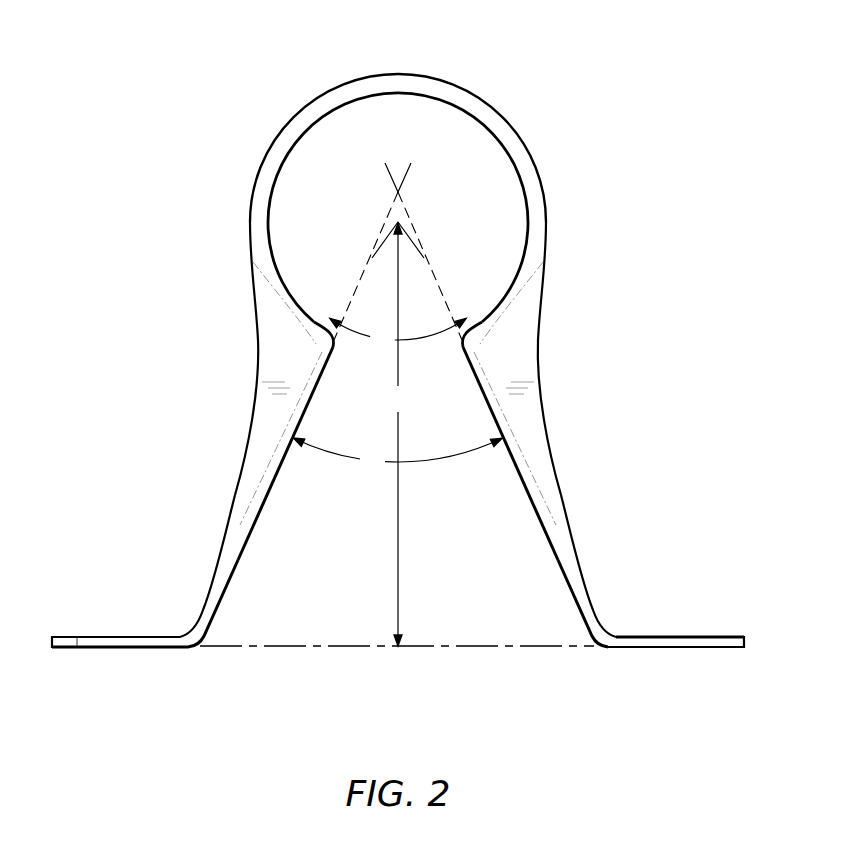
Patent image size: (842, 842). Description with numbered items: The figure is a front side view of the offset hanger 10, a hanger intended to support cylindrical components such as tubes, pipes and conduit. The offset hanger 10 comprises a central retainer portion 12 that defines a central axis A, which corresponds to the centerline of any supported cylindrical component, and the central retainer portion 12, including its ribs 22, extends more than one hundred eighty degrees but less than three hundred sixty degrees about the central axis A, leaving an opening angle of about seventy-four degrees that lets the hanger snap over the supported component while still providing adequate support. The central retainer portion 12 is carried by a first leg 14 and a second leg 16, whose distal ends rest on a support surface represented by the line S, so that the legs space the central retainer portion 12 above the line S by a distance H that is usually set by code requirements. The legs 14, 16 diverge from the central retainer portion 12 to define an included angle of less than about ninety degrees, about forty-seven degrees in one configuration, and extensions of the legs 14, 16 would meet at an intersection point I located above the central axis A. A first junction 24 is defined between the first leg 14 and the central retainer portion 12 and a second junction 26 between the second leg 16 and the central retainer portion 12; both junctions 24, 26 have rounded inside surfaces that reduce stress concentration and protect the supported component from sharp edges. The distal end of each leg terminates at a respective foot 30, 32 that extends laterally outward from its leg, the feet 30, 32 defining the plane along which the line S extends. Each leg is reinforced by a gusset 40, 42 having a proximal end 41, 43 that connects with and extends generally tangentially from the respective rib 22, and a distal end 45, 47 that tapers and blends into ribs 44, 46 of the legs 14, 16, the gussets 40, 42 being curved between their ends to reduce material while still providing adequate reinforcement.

The offset hanger 10 is at (602, 334).
The central retainer portion 12 is at (417, 73).
The first leg 14 is at (239, 494).
The second leg 16 is at (580, 532).
The rib 22 is at (353, 77).
The first junction 24 is at (322, 336).
The second junction 26 is at (476, 337).
The foot 30 is at (118, 636).
The foot 32 is at (674, 636).
The gusset 40 is at (278, 362).
The proximal end of gusset 41 is at (263, 326).
The gusset 42 is at (522, 361).
The proximal end of gusset 43 is at (533, 300).
The rib 44 is at (205, 618).
The distal end of gusset 45 is at (262, 446).
The rib 46 is at (590, 613).
The distal end of gusset 47 is at (538, 438).
The central axis A is at (401, 221).
The intersection point I is at (401, 190).
The distance H is at (397, 434).
The support surface line S is at (291, 648).